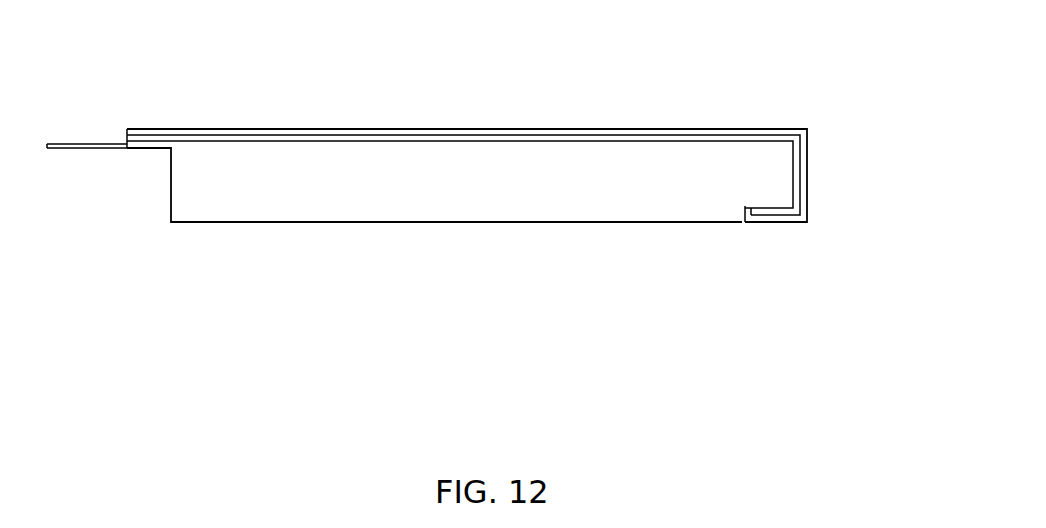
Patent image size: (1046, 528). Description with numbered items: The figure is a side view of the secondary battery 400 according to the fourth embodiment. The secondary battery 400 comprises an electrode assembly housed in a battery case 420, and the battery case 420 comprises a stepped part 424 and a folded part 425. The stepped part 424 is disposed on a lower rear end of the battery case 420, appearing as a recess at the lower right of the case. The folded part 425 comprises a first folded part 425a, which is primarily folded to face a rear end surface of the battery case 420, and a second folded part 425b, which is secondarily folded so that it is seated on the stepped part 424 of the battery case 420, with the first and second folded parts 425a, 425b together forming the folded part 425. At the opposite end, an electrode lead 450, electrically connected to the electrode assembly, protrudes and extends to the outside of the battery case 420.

The secondary battery 400 is at (504, 163).
The battery case 420 is at (269, 232).
The stepped part 424 is at (766, 190).
The folded part 425 is at (545, 197).
The first folded part 425a is at (808, 175).
The second folded part 425b is at (773, 223).
The electrode lead 450 is at (67, 143).